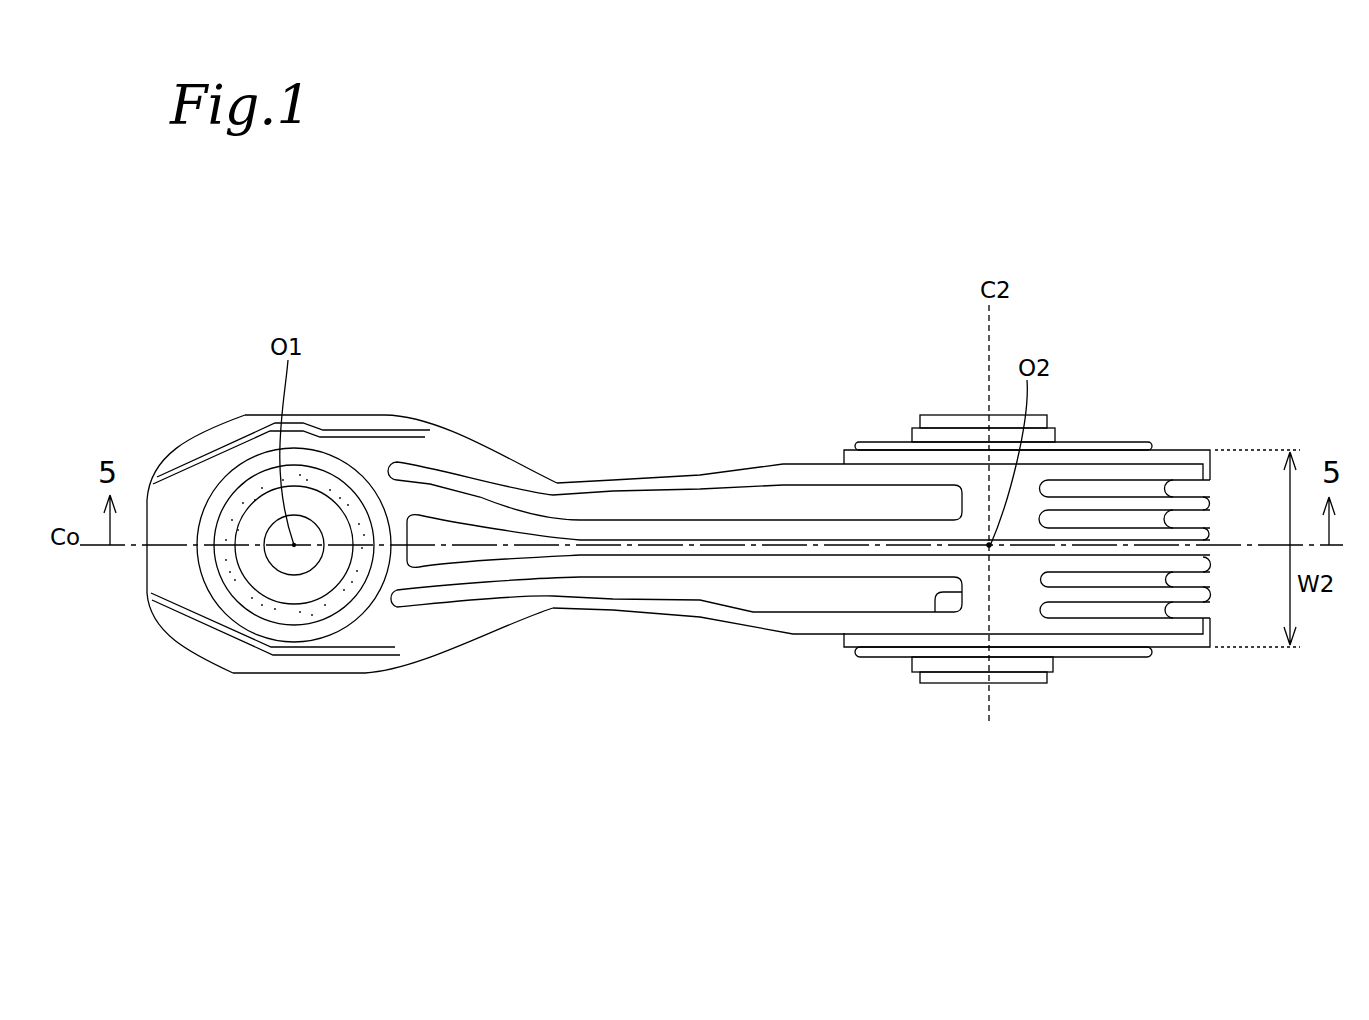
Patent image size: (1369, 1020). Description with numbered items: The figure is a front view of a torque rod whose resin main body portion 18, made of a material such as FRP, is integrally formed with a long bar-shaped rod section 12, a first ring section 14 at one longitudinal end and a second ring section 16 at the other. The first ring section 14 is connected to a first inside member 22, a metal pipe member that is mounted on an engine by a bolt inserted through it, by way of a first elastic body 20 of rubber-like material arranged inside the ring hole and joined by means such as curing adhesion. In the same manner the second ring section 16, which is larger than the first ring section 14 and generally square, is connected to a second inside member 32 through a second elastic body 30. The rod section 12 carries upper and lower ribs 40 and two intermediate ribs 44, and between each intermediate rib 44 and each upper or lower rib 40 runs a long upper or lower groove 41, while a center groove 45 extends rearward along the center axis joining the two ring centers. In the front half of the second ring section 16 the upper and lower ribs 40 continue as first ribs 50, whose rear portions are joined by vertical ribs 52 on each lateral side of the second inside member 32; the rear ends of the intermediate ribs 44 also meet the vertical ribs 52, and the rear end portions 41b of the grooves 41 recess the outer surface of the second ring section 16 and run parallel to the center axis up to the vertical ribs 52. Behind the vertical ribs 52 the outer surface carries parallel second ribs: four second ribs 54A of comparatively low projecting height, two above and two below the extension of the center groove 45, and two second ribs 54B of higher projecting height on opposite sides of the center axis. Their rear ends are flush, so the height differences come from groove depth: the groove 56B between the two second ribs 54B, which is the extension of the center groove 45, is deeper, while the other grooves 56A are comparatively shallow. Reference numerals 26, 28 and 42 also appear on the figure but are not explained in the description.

The rod section 12 is at (668, 588).
The first ring section 14 is at (213, 388).
The second ring section 16 is at (906, 413).
The main body portion 18 is at (550, 433).
The first elastic body 20 is at (263, 608).
The first inside member 22 is at (297, 592).
The bent flange portion 26 is at (322, 417).
The outer peripheral flange 28 is at (183, 440).
The second elastic body 30 is at (1065, 441).
The second inside member 32 is at (962, 415).
The upper and lower ribs 40 is at (732, 482).
The upper and lower grooves 41 is at (660, 495).
The rear end portions 41b is at (940, 495).
The upper slot portion 42 is at (700, 503).
The intermediate ribs 44 is at (770, 530).
The center groove 45 is at (758, 572).
The first ribs 50 is at (866, 473).
The vertical ribs 52 is at (1005, 620).
The second ribs 54A is at (1191, 470).
The second ribs 54B is at (1214, 535).
The grooves 56A is at (1147, 447).
The groove 56B is at (1162, 548).